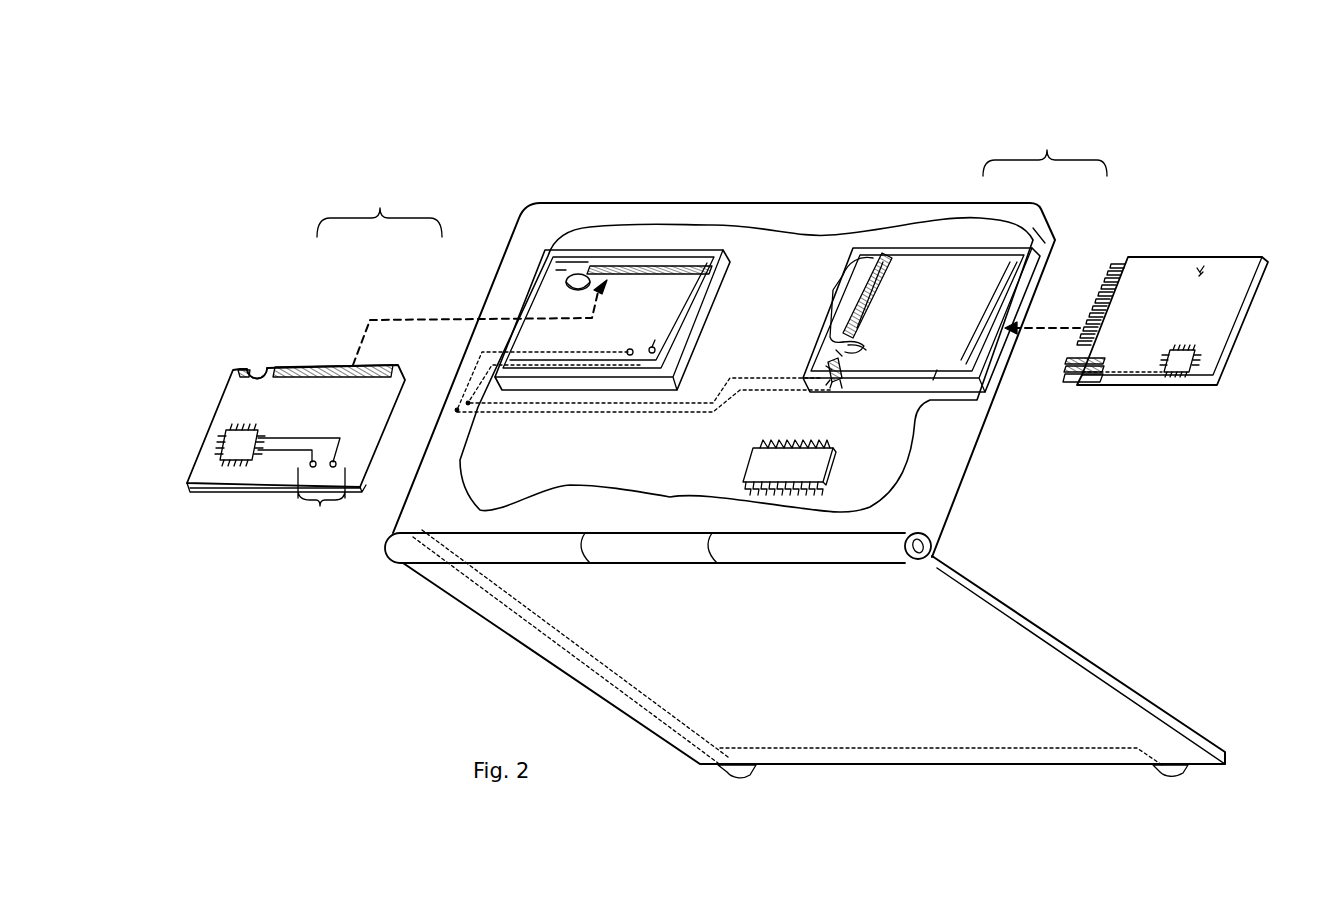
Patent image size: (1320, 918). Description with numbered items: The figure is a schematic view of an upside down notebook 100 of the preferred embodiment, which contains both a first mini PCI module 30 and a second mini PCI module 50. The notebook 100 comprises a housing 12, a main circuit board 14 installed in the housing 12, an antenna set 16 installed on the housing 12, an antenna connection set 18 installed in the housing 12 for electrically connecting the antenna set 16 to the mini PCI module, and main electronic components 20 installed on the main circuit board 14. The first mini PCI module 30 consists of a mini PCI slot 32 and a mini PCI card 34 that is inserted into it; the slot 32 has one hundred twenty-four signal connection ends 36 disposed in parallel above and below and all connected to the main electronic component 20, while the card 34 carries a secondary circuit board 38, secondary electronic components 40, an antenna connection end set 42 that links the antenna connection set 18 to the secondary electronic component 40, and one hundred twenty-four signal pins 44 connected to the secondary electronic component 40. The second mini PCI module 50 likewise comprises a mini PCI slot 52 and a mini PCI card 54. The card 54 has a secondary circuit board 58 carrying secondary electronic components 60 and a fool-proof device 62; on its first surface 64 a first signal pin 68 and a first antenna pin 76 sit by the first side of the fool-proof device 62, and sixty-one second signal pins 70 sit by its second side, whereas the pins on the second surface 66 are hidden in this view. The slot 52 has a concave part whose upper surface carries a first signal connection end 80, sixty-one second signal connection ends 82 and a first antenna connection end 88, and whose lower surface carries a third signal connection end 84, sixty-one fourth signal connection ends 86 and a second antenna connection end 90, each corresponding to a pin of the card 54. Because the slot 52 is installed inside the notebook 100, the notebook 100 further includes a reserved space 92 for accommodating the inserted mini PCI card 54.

The notebook 100 is at (1143, 121).
The housing 12 is at (573, 203).
The main circuit board 14 is at (725, 228).
The antenna set 16 is at (716, 768).
The antenna connection set 18 is at (503, 612).
The main electronic component 20 is at (810, 457).
The first mini PCI module 30 is at (309, 359).
The mini PCI slot 32 is at (541, 280).
The mini PCI card 34 is at (325, 365).
The signal connection ends 36 is at (670, 268).
The secondary circuit board 38 is at (241, 486).
The secondary electronic components 40 is at (232, 447).
The antenna connection end set 42 is at (301, 484).
The signal pins 44 is at (246, 369).
The second mini PCI module 50 is at (1008, 275).
The mini PCI slot 52 is at (914, 297).
The mini PCI card 54 is at (1136, 300).
The secondary circuit board 58 is at (1163, 272).
The secondary electronic component 60 is at (1183, 366).
The fool-proof device 62 is at (1067, 342).
The first surface 64 is at (1222, 313).
The second surface 66 is at (1208, 268).
The first signal pin 68 is at (1064, 368).
The second signal pins 70 is at (1092, 350).
The first antenna pin 76 is at (1075, 383).
The first signal connection end 80 is at (835, 352).
The second signal connection ends 82 is at (845, 300).
The third signal connection end 84 is at (836, 381).
The fourth signal connection ends 86 is at (888, 268).
The first antenna connection end 88 is at (826, 366).
The second antenna connection end 90 is at (826, 385).
The reserved space 92 is at (937, 370).